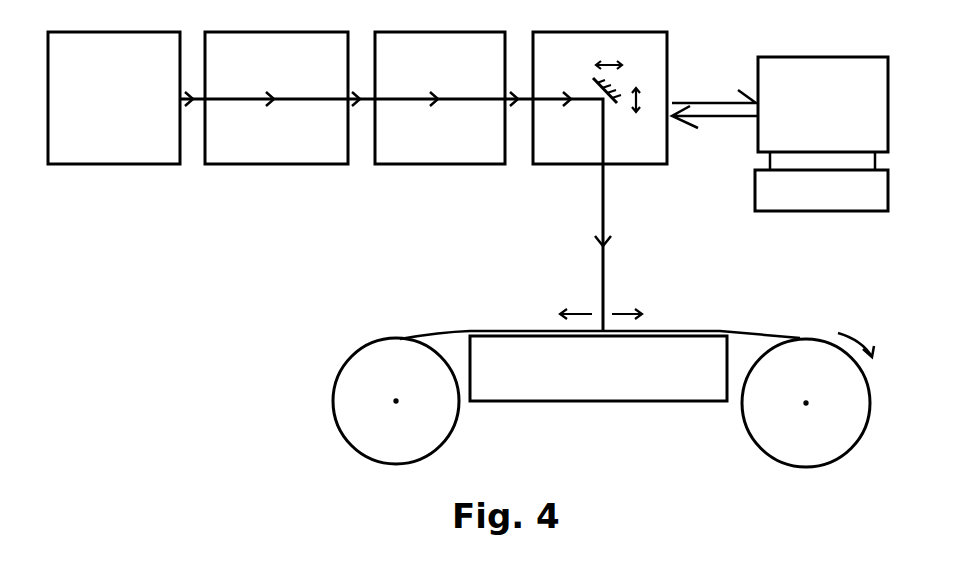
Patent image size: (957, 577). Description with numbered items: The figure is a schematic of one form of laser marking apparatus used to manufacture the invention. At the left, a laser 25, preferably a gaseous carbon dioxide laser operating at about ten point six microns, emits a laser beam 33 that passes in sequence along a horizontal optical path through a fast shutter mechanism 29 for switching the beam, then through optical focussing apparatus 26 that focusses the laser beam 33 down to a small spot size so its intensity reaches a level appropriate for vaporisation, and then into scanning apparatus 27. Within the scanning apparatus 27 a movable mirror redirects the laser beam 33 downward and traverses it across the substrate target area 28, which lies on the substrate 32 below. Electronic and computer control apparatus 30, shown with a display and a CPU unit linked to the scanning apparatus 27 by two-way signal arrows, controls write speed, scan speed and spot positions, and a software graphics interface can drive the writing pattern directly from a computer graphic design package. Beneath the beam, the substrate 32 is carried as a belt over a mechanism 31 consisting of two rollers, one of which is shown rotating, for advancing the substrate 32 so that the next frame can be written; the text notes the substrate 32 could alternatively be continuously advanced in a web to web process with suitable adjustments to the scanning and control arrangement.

The laser 25 is at (114, 88).
The fast shutter mechanism 29 is at (276, 88).
The optical focussing apparatus 26 is at (440, 88).
The scanning apparatus 27 is at (600, 88).
The electronic and computer control apparatus 30 is at (780, 123).
The laser beam 33 is at (200, 114).
The substrate target area 28 is at (676, 327).
The substrate 32 is at (780, 328).
The mechanism for advancing the substrate 31 is at (604, 401).